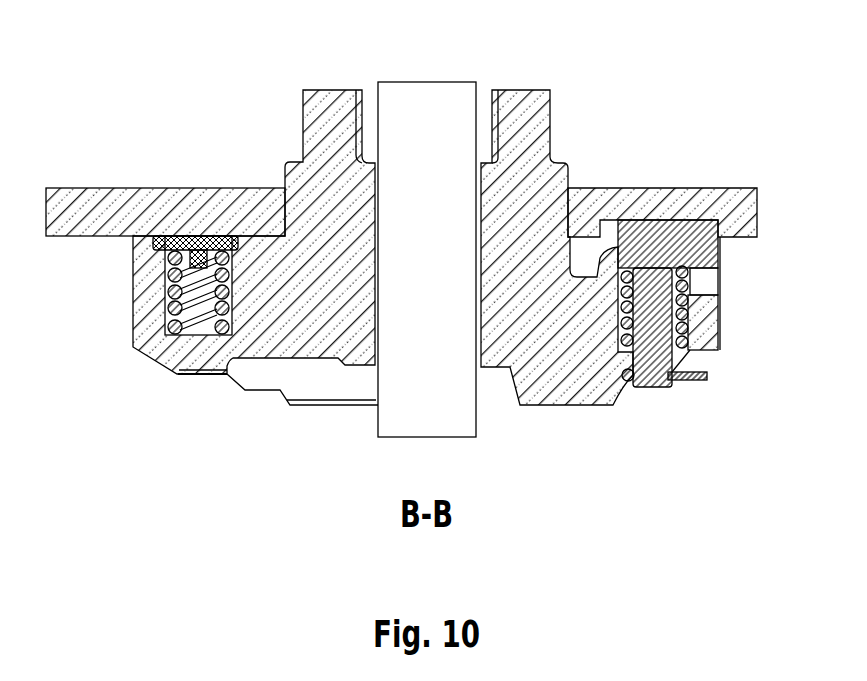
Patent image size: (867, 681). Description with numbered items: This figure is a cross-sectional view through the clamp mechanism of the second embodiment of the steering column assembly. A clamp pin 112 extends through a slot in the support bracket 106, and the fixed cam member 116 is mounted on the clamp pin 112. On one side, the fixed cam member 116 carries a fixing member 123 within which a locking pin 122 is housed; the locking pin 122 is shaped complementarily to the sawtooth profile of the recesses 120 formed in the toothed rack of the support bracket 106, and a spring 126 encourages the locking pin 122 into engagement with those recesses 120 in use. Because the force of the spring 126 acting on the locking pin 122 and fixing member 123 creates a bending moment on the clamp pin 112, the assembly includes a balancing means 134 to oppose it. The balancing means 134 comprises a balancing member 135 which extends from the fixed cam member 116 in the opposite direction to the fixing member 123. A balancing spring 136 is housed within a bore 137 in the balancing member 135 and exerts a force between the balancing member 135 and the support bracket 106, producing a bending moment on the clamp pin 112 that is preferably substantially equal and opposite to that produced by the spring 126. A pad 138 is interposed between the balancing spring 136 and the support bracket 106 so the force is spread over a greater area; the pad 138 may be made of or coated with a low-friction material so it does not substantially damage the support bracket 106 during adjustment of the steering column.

The support bracket 106 is at (97, 207).
The clamp pin 112 is at (429, 82).
The fixed cam member 116 is at (350, 383).
The recesses 120 is at (611, 220).
The locking pin 122 is at (692, 232).
The fixing member 123 is at (720, 322).
The spring 126 is at (690, 347).
The balancing means 134 is at (152, 364).
The balancing member 135 is at (213, 362).
The balancing spring 136 is at (138, 308).
The bore 137 is at (168, 273).
The pad 138 is at (158, 242).